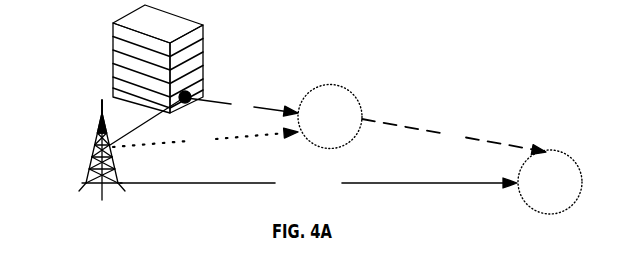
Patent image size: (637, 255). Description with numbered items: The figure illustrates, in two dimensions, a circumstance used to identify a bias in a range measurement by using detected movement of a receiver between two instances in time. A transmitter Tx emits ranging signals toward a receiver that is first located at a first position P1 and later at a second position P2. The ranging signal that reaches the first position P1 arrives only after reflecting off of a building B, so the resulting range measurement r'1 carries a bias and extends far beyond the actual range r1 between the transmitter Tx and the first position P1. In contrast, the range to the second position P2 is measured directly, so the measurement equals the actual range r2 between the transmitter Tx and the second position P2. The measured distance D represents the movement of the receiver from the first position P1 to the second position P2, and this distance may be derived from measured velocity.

The transmitter Tx is at (84, 170).
The building with reflection point B is at (158, 59).
The first position P1 is at (330, 117).
The second position P2 is at (550, 182).
The actual range between Tx and P1 r1 is at (205, 139).
The range measurement r'1 is at (242, 107).
The actual range between Tx and P2 r2 is at (318, 184).
The measured distance D is at (454, 136).